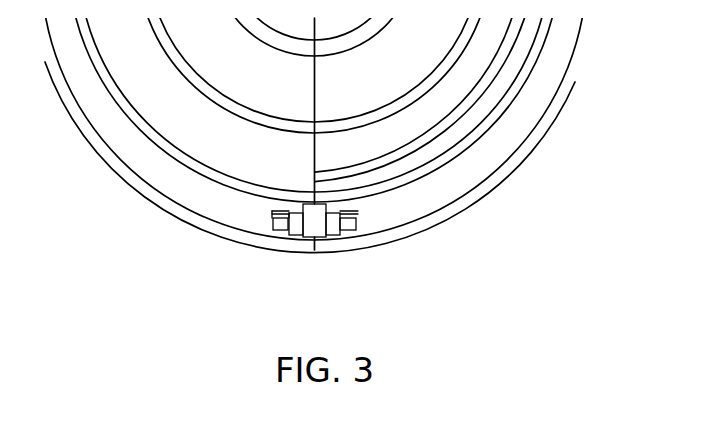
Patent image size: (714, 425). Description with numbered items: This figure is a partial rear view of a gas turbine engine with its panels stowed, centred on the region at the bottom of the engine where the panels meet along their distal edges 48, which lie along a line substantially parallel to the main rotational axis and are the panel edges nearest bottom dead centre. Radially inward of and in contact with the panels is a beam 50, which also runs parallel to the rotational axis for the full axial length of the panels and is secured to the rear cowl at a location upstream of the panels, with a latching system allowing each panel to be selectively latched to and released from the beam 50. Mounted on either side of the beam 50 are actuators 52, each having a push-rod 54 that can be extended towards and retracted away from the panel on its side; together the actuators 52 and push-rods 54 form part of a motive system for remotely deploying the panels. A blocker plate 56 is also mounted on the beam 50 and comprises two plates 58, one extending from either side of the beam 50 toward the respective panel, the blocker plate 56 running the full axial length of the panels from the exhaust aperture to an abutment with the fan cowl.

The distal edges 48 is at (324, 248).
The beam 50 is at (338, 228).
The actuators 52 is at (296, 233).
The push-rod 54 is at (275, 228).
The blocker plate 56 is at (275, 215).
The plates 58 is at (273, 212).